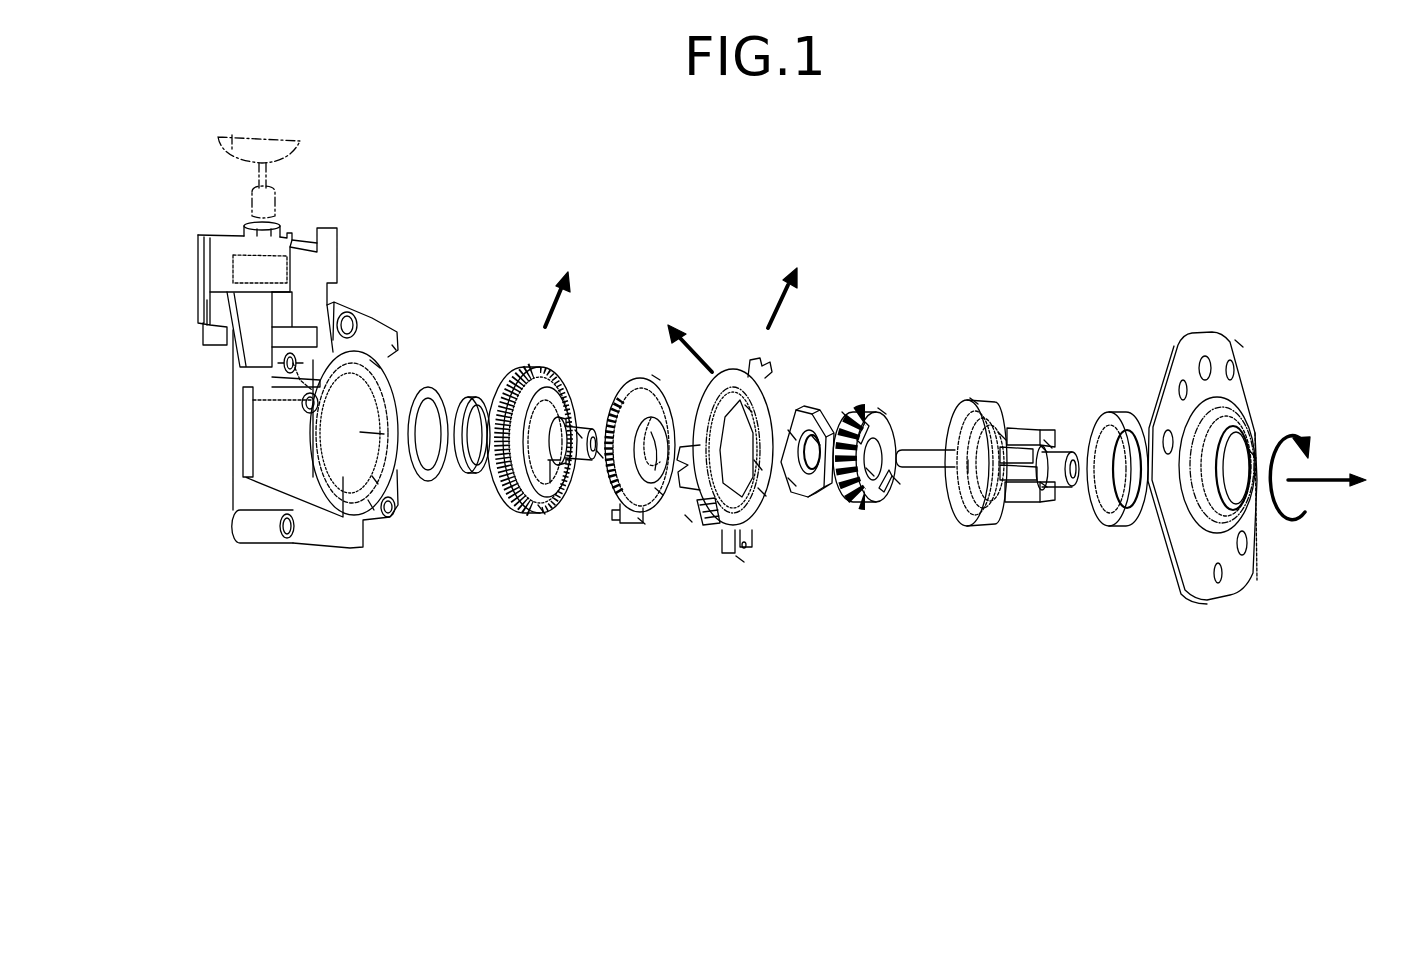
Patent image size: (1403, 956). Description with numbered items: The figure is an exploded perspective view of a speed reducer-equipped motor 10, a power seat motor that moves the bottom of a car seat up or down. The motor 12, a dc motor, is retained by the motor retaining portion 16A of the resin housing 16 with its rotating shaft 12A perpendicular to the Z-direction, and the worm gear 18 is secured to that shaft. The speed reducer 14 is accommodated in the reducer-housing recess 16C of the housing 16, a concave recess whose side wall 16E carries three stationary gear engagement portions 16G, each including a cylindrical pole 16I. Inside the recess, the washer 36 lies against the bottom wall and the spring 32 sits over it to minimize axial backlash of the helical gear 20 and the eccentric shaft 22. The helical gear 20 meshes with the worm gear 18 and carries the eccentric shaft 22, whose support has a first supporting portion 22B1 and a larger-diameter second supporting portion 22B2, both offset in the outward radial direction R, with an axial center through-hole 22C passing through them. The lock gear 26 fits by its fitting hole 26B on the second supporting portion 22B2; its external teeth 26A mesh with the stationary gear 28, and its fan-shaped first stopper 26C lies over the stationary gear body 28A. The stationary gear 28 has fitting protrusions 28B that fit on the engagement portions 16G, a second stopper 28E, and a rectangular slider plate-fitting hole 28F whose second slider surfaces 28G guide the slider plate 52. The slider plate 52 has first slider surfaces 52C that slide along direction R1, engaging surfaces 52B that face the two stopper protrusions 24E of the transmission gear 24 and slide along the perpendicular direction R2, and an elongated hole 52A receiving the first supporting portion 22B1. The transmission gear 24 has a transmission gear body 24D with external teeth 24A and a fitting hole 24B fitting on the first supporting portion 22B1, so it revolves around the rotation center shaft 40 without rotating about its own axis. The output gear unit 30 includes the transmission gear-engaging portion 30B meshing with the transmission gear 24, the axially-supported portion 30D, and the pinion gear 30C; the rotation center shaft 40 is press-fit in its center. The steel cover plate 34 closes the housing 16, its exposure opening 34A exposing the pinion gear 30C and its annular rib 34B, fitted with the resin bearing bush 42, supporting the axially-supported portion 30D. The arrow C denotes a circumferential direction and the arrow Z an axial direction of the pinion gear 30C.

The speed reducer-equipped motor 10 is at (926, 158).
The speed reducer 14 is at (948, 233).
The motor 12 is at (304, 147).
The rotating shaft 12A is at (256, 166).
The worm gear 18 is at (279, 202).
The housing 16 is at (332, 553).
The motor retaining portion 16A is at (206, 306).
The cylindrical pole 16I is at (392, 346).
The stationary gear engagement portions 16G is at (378, 365).
The reducer-housing recess 16C is at (372, 508).
The side wall 16E is at (375, 482).
The washer 36 is at (432, 386).
The spring 32 is at (478, 400).
The helical gear 20 is at (522, 368).
The eccentric shaft 22 is at (592, 472).
The first supporting portion 22B1 is at (578, 438).
The second supporting portion 22B2 is at (541, 513).
The axial center through-hole 22C is at (600, 457).
The R-direction R is at (550, 308).
The lock gear 26 is at (628, 380).
The external teeth 26A is at (656, 376).
The fitting hole 26B is at (660, 492).
The first stopper 26C is at (642, 522).
The stationary gear 28 is at (758, 526).
The stationary gear body 28A is at (762, 493).
The fitting protrusions 28B is at (741, 560).
The second stopper 28E is at (690, 520).
The slider plate-fitting hole 28F is at (758, 466).
The second slider surfaces 28G is at (748, 410).
The radial direction R1 is at (708, 366).
The second radial direction R2 is at (795, 300).
The slider plate 52 is at (818, 472).
The elongated hole 52A is at (816, 440).
The engaging surfaces 52B is at (792, 438).
The first slider surfaces 52C is at (793, 482).
The transmission gear 24 is at (884, 422).
The external teeth 24A is at (883, 410).
The fitting hole 24B is at (896, 480).
The transmission gear body 24D is at (870, 473).
The stopper protrusions 24E is at (846, 418).
The rotation center shaft 40 is at (930, 450).
The output gear unit 30 is at (1006, 396).
The transmission gear-engaging portion 30B is at (975, 401).
The pinion gear 30C is at (1048, 446).
The axially-supported portion 30D is at (1002, 436).
The bearing bush 42 is at (1118, 426).
The cover plate 34 is at (1214, 603).
The exposure opening 34A is at (1240, 345).
The annular rib 34B is at (1259, 462).
The C-direction C is at (1288, 438).
The Z-direction Z is at (1326, 477).